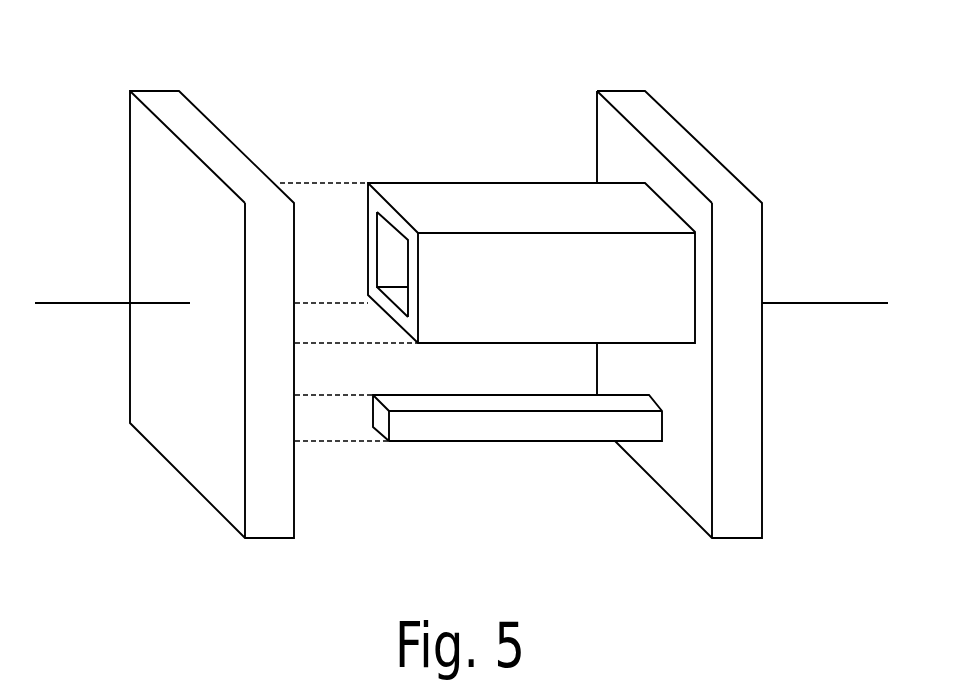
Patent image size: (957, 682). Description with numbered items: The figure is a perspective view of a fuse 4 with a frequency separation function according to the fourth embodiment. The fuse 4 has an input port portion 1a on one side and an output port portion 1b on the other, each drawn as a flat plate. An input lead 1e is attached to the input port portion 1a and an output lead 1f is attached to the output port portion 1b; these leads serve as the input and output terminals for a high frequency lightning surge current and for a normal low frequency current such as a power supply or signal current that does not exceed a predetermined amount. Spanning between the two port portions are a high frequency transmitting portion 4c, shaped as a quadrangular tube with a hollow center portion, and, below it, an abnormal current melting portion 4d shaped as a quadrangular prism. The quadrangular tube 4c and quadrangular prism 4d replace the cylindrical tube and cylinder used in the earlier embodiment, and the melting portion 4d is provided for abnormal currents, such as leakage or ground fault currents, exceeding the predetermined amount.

The input port portion 1a is at (152, 90).
The output port portion 1b is at (623, 90).
The input lead 1e is at (80, 301).
The output lead 1f is at (845, 301).
The fuse with a frequency separation function 4 is at (499, 65).
The high frequency transmitting portion 4c is at (503, 182).
The abnormal current melting portion 4d is at (546, 442).